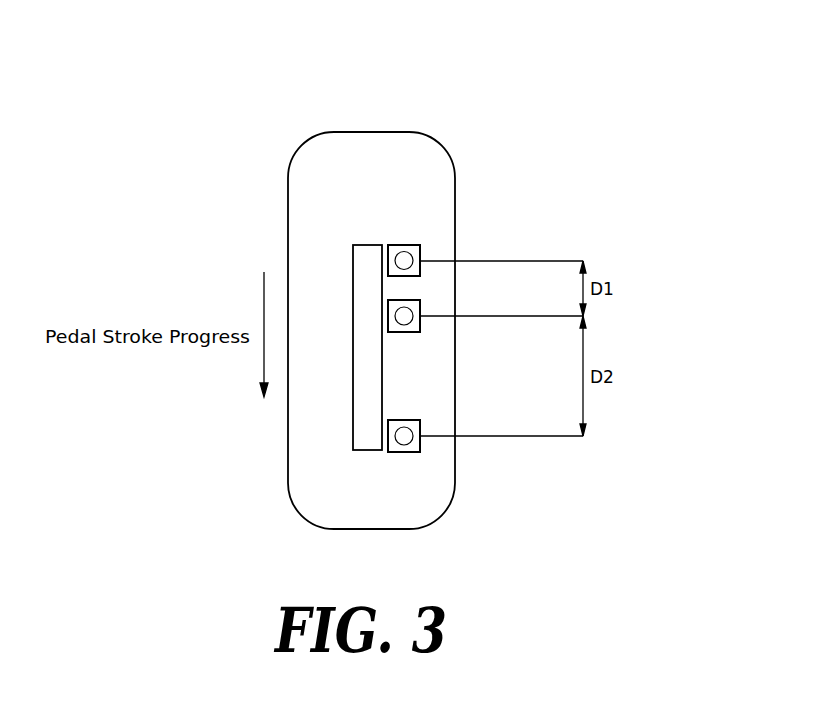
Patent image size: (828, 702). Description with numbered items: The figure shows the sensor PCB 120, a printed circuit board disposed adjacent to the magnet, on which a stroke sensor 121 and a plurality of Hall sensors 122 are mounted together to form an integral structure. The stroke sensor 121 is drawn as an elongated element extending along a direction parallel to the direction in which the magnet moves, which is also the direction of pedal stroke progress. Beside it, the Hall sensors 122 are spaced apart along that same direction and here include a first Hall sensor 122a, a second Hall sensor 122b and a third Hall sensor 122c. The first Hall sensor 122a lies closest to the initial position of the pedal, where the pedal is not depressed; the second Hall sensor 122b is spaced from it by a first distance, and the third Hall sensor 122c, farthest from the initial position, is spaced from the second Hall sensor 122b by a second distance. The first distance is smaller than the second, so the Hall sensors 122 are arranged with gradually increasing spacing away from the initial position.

The sensor PCB 120 is at (401, 119).
The stroke sensor 121 is at (353, 404).
The Hall sensors 122 is at (484, 348).
The first Hall sensor 122a is at (420, 270).
The second Hall sensor 122b is at (420, 327).
The third Hall sensor 122c is at (457, 422).